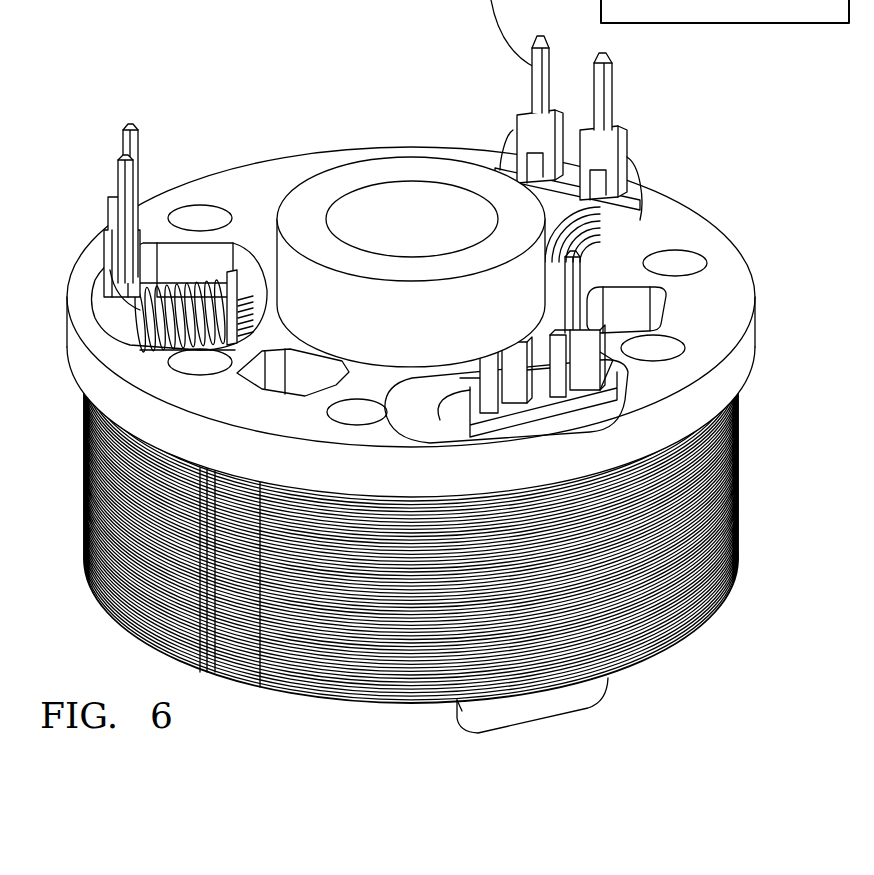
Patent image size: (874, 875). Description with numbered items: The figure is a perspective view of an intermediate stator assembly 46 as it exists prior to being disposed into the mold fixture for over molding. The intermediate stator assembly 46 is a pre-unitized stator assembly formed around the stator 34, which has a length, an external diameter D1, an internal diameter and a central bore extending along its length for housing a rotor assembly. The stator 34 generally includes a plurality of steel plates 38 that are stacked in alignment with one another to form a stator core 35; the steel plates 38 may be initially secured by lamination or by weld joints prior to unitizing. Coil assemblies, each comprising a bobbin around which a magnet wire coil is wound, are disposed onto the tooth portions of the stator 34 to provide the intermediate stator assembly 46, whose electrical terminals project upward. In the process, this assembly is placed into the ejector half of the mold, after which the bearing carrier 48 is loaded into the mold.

The intermediate stator assembly 46 is at (152, 93).
The bearing carrier 48 is at (719, 288).
The steel plates 38 is at (740, 409).
The stator 34 is at (83, 450).
The stator core 35 is at (731, 474).
The external diameter D1 is at (737, 542).